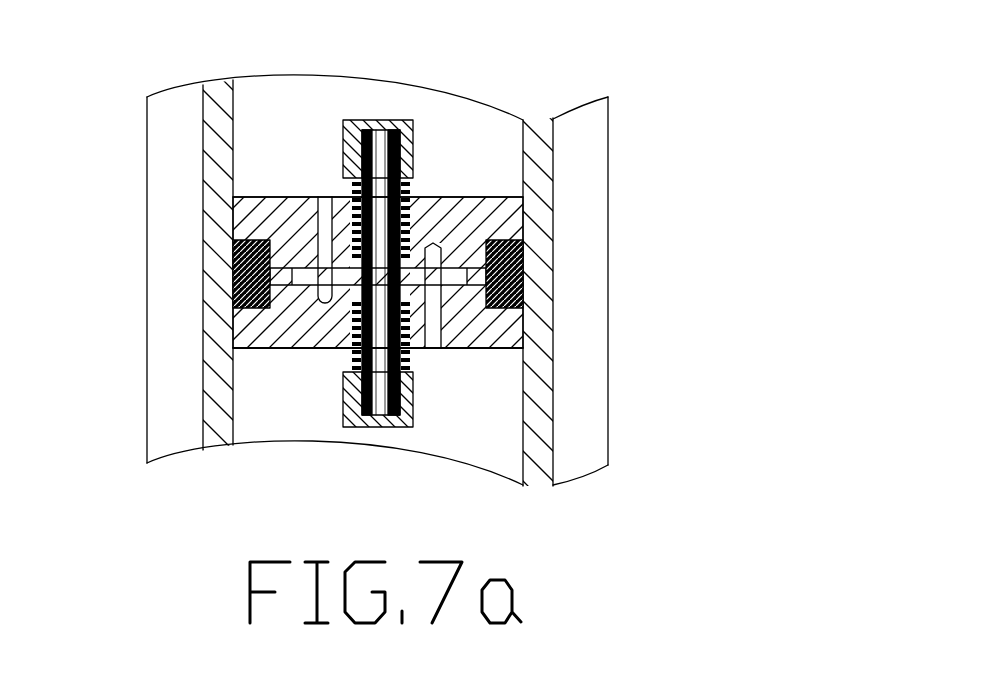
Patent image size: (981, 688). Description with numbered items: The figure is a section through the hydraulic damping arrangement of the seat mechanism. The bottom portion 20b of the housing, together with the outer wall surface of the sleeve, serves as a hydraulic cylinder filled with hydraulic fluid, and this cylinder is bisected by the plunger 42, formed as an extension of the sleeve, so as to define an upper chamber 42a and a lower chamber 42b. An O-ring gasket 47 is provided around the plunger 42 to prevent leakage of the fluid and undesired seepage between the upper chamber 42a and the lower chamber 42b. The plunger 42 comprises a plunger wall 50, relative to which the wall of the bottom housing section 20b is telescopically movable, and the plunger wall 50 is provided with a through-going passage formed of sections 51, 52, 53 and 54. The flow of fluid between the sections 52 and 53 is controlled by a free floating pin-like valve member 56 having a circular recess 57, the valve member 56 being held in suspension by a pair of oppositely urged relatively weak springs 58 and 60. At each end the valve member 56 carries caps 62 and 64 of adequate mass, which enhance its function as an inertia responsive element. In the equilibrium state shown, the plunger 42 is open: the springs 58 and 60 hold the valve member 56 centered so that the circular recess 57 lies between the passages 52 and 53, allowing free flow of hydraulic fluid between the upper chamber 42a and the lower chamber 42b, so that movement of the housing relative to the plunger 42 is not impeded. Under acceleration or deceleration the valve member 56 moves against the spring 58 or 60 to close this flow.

The bottom portion of the housing 20b is at (173, 380).
The plunger 42 is at (655, 349).
The upper chamber 42a is at (497, 147).
The lower chamber 42b is at (498, 438).
The gasket 47 is at (523, 268).
The plunger wall 50 is at (490, 332).
The passage section 51 is at (434, 348).
The passage section 52 is at (408, 270).
The passage section 53 is at (351, 292).
The passage section 54 is at (323, 207).
The valve member 56 is at (417, 147).
The circular recess 57 is at (345, 268).
The spring 58 is at (357, 195).
The spring 60 is at (355, 350).
The cap 62 is at (413, 152).
The cap 64 is at (403, 407).